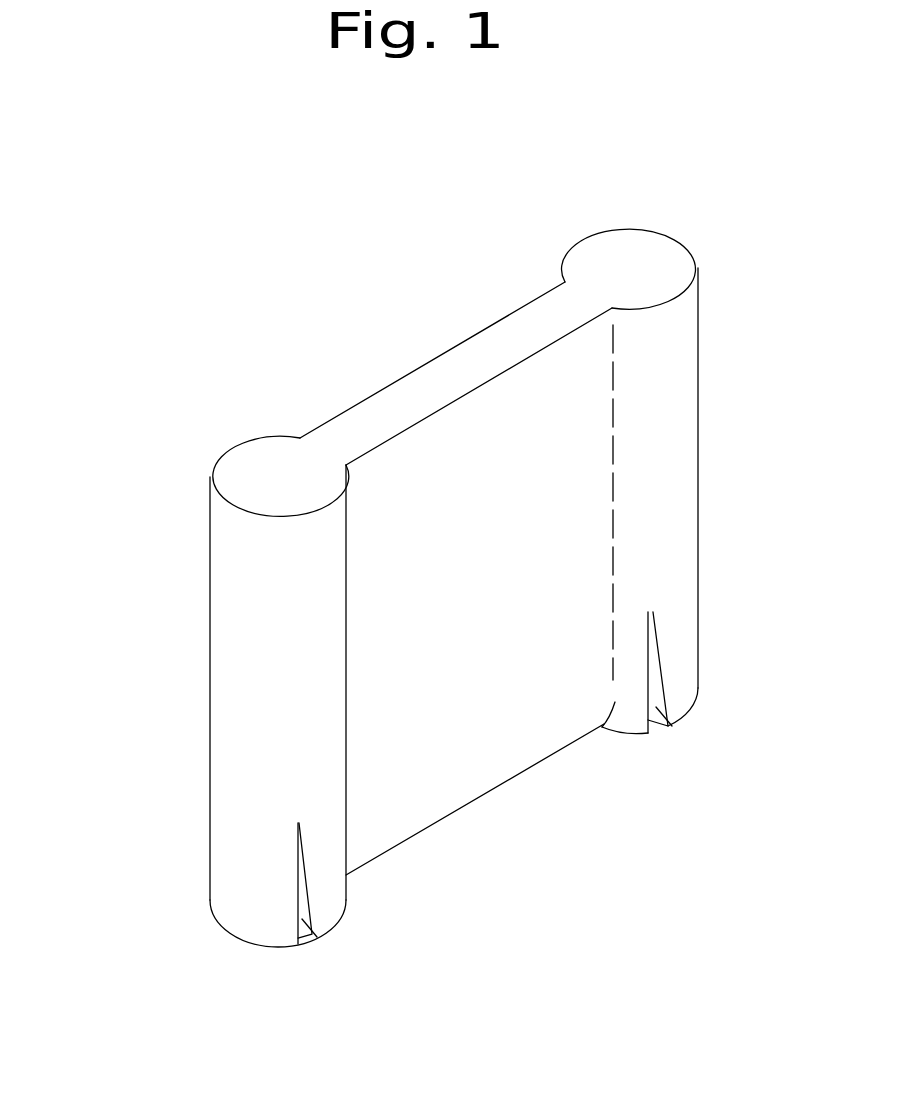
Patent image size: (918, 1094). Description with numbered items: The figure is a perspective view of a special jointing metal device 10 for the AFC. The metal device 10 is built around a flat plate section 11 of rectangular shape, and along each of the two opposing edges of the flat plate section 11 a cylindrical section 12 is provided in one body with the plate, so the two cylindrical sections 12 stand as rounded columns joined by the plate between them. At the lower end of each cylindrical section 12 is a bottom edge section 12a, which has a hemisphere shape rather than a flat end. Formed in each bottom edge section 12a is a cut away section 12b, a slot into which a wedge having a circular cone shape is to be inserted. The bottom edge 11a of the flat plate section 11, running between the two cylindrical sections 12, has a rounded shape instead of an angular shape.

The metal device 10 is at (423, 353).
The flat plate section 11 is at (486, 770).
The bottom edge of the flat plate section 11a is at (418, 835).
The cylindrical section 12 is at (668, 475).
The bottom edge section of the cylindrical section 12a is at (690, 680).
The cut away section 12b is at (658, 705).